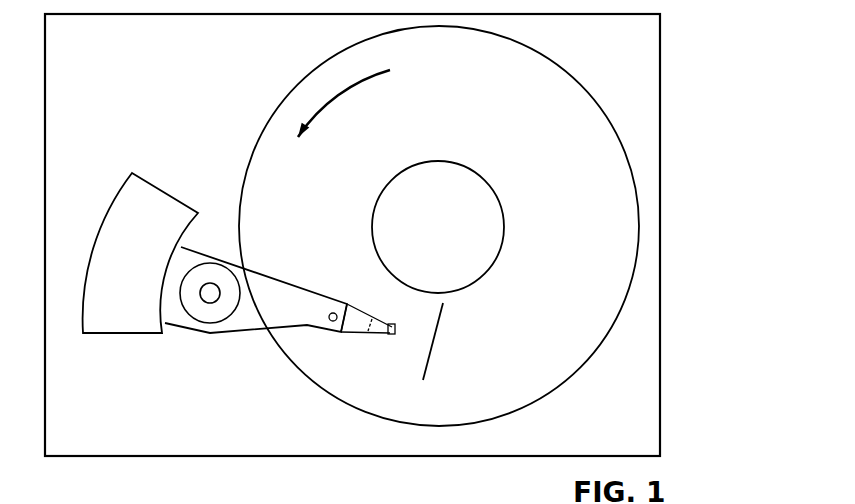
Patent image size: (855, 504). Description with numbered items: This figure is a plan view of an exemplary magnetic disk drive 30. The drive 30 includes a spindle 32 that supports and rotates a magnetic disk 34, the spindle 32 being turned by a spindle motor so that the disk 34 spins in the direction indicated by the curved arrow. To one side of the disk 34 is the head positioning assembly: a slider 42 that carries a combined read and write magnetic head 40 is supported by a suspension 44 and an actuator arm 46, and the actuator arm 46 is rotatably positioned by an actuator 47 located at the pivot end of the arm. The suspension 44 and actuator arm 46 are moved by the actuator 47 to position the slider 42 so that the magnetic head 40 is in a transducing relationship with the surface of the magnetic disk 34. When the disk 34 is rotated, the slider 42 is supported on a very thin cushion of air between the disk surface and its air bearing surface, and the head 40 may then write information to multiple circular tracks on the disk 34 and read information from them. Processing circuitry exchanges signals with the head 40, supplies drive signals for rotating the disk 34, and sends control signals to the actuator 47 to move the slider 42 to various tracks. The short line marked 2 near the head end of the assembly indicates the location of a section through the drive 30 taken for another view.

The magnetic disk drive 30 is at (677, 50).
The spindle 32 is at (477, 173).
The magnetic disk 34 is at (583, 248).
The magnetic head 40 is at (400, 334).
The slider 42 is at (397, 320).
The suspension 44 is at (357, 334).
The actuator arm 46 is at (298, 290).
The actuator 47 is at (174, 200).
The section line 2- 2 is at (445, 310).